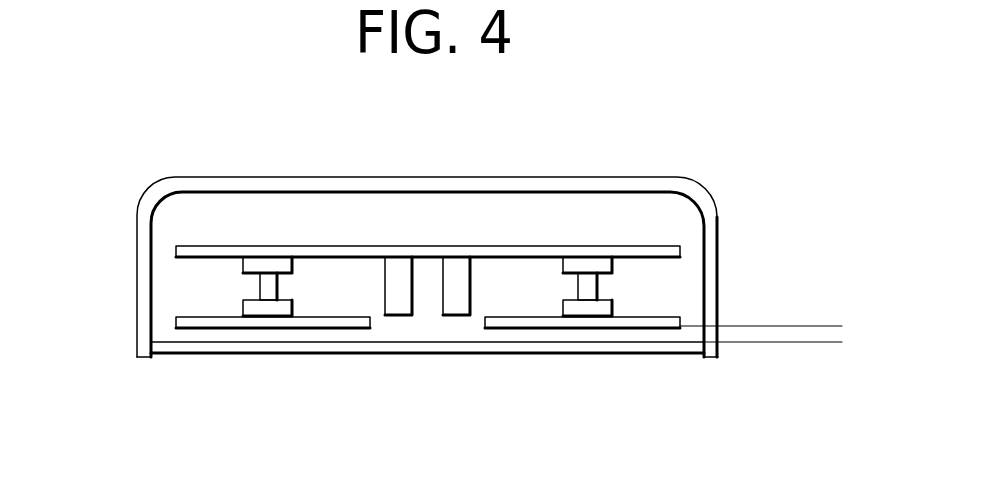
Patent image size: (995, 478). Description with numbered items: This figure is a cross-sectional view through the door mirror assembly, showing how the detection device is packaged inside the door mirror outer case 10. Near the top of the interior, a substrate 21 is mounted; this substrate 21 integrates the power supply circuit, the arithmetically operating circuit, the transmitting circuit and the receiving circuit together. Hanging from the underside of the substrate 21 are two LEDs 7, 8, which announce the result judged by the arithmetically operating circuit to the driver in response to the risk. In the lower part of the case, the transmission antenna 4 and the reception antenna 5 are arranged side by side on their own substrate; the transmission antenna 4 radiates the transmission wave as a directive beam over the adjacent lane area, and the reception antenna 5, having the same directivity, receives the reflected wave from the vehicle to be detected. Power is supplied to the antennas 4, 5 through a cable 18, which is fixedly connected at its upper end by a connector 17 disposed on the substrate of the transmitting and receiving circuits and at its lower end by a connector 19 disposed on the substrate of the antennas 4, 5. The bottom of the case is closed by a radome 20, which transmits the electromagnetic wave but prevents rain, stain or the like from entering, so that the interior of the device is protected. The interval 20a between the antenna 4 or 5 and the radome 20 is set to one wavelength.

The door mirror outer case 10 is at (140, 207).
The substrate 21 is at (176, 248).
The connector 17 is at (243, 268).
The cable 18 is at (260, 283).
The connector 19 is at (243, 304).
The reception antenna 5 is at (225, 329).
The LED 8 is at (393, 316).
The LED 7 is at (453, 316).
The transmission antenna 4 is at (627, 329).
The radome 20 is at (693, 354).
The interval 20a is at (833, 288).